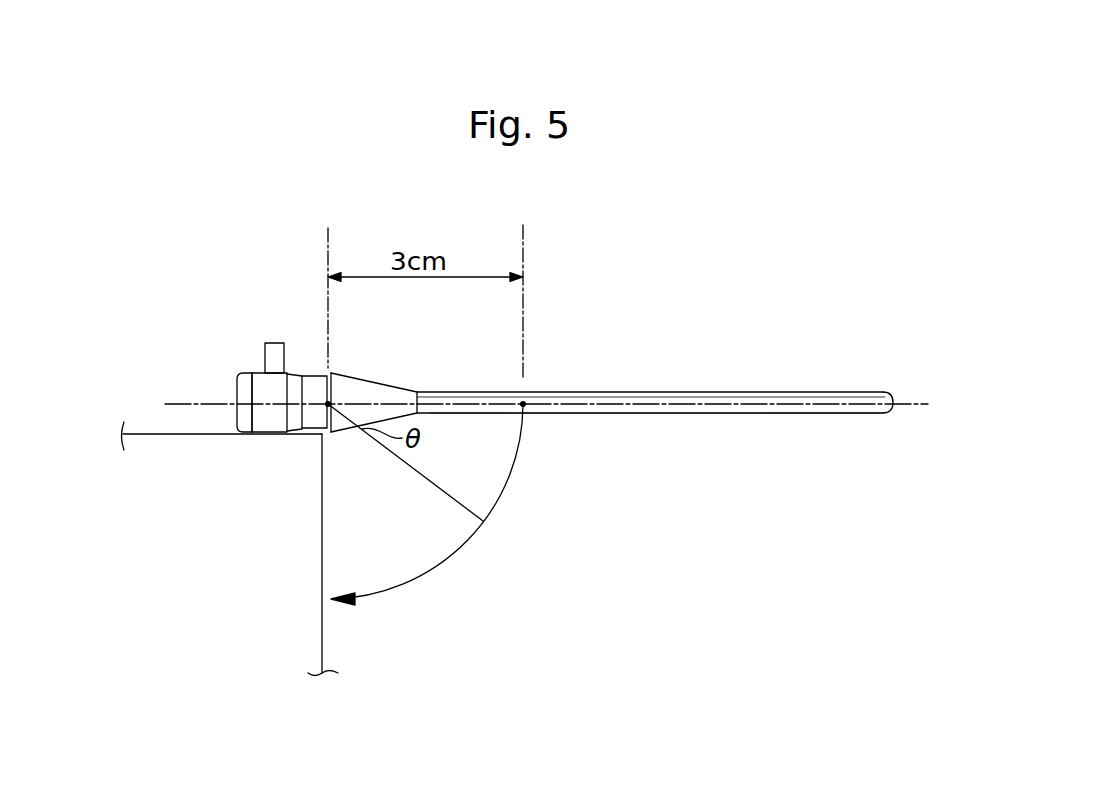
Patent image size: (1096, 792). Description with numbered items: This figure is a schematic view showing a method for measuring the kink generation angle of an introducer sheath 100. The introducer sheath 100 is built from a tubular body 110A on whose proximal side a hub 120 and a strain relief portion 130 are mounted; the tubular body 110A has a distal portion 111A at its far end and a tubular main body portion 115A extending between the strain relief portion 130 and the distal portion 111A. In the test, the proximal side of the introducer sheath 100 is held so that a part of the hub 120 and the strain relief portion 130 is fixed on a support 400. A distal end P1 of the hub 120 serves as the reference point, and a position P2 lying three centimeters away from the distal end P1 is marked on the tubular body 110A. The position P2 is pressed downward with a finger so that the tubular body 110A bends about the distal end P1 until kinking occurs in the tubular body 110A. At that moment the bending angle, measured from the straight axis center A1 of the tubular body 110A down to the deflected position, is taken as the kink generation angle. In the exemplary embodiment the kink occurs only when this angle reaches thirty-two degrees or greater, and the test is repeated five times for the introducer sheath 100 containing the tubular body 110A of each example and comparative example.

The introducer sheath 100 is at (622, 387).
The tubular body 110A is at (717, 393).
The distal portion of the tubular body 111A is at (893, 394).
The tubular main body portion 115A is at (783, 414).
The hub 120 is at (258, 387).
The strain relief portion 130 is at (315, 380).
The support 400 is at (142, 447).
The distal end of the hub P1 is at (328, 404).
The pressing position P2 is at (523, 404).
The axis center of the tubular body A1 is at (918, 405).